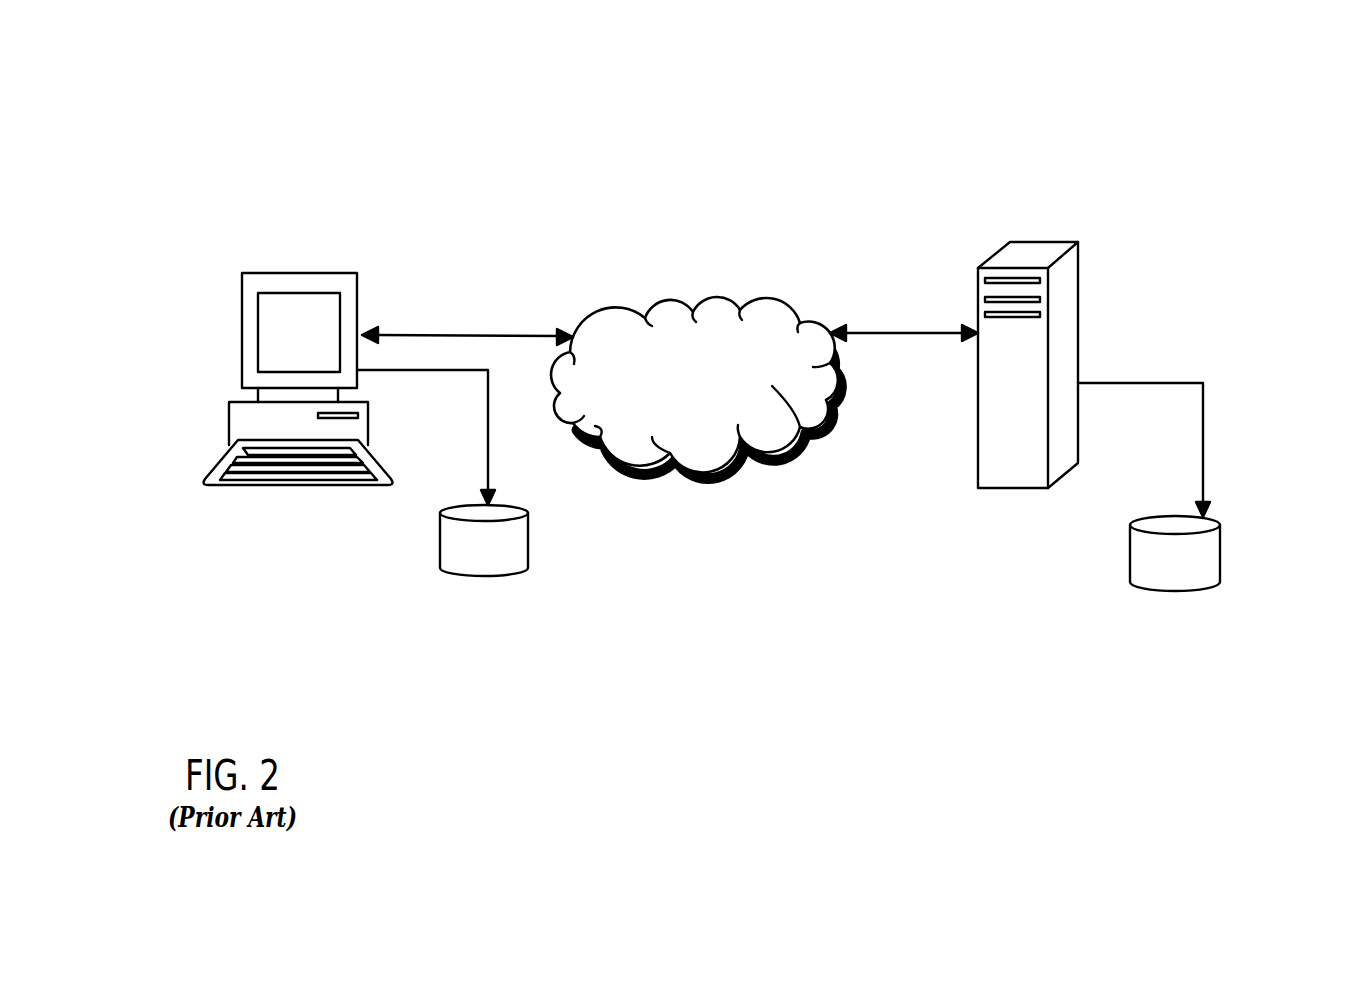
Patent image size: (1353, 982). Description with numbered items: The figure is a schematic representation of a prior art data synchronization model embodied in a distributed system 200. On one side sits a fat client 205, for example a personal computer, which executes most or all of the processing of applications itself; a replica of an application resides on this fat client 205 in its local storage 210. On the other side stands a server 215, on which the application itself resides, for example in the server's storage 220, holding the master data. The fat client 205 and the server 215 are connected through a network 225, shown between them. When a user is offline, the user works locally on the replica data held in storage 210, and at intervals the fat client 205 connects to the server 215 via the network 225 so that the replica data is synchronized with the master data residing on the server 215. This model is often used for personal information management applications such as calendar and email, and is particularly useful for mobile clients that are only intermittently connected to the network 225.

The distributed system 200 is at (122, 105).
The fat client 205 is at (242, 274).
The storage 210 is at (530, 553).
The server 215 is at (973, 310).
The storage 220 is at (1222, 567).
The network 225 is at (600, 302).